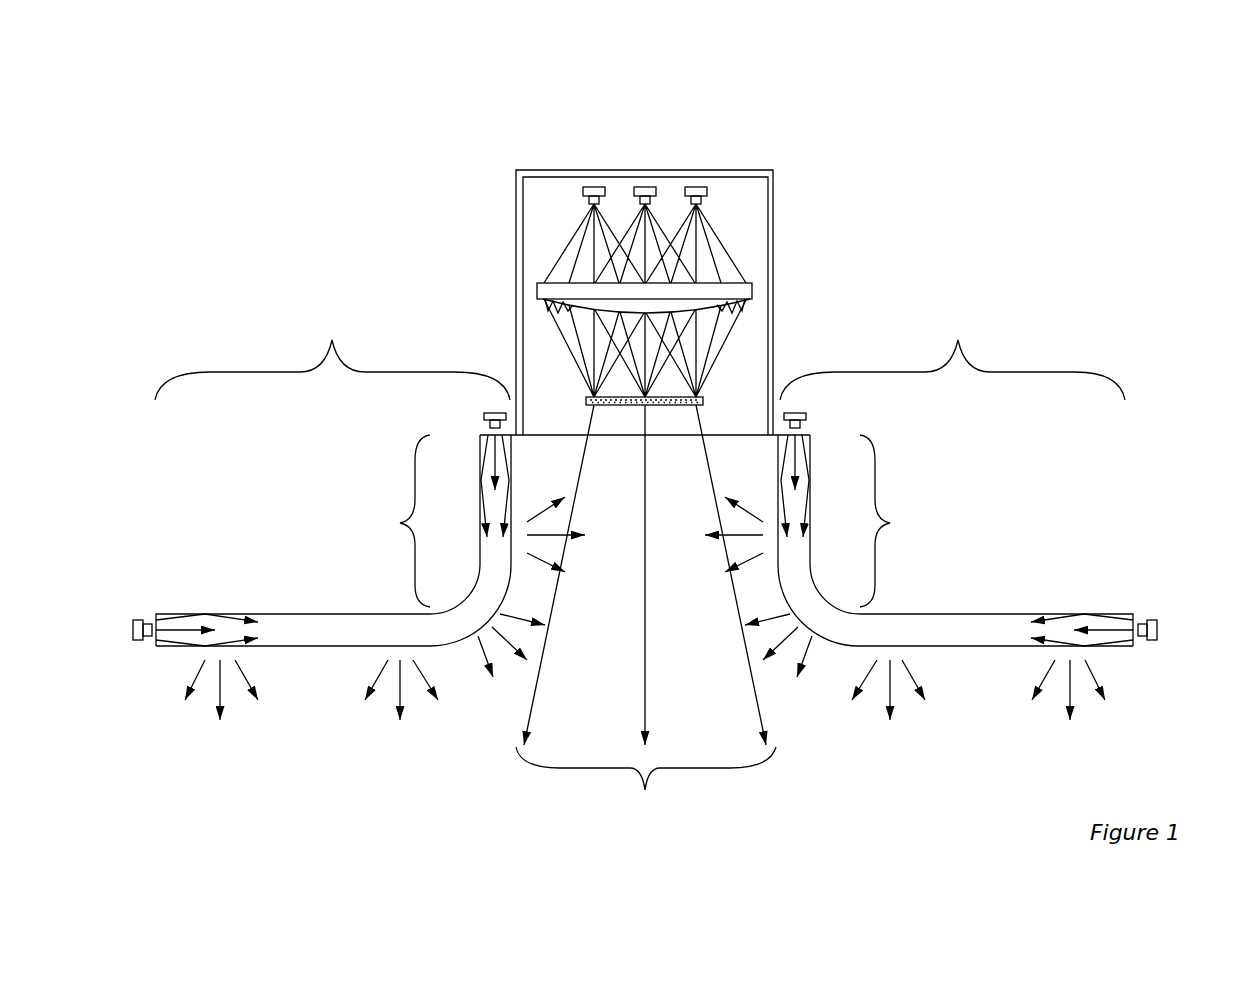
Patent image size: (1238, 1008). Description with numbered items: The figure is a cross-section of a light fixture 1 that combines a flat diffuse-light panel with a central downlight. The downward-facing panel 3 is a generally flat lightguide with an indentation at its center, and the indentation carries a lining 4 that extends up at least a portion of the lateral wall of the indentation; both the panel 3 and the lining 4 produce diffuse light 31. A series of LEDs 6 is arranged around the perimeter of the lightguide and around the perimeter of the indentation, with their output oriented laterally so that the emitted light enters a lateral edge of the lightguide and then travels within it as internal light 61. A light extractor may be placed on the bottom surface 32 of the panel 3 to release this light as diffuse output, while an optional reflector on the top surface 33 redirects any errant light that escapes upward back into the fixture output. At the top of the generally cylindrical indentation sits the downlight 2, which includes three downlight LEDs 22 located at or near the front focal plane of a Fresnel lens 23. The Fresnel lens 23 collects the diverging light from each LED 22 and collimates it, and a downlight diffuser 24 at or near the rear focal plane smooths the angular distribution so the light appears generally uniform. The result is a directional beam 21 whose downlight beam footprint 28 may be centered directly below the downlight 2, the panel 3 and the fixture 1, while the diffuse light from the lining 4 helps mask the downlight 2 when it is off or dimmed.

The light fixture 1 is at (1018, 182).
The downlight 2 is at (775, 203).
The downlight LEDs 22 is at (596, 186).
The Fresnel lens 23 is at (750, 283).
The downlight diffuser 24 is at (705, 400).
The directional beam 21 is at (532, 700).
The downlight beam footprint 28 is at (646, 782).
The panel 3 is at (640, 358).
The lining 4 is at (645, 521).
The LEDs 6 is at (492, 412).
The internal light 61 is at (495, 464).
The diffuse light 31 is at (551, 533).
The bottom surface 32 is at (360, 645).
The top surface 33 is at (297, 613).